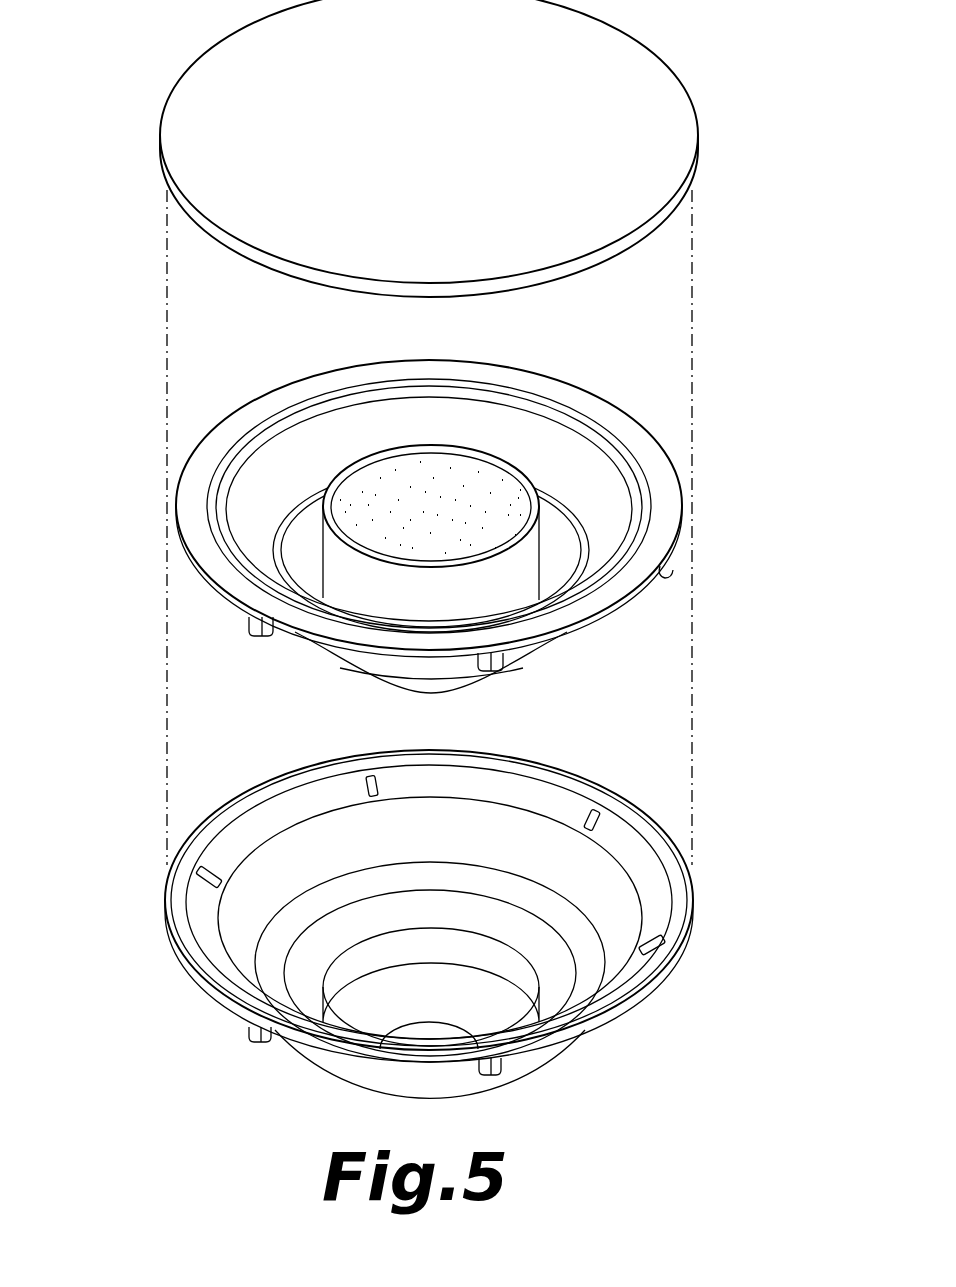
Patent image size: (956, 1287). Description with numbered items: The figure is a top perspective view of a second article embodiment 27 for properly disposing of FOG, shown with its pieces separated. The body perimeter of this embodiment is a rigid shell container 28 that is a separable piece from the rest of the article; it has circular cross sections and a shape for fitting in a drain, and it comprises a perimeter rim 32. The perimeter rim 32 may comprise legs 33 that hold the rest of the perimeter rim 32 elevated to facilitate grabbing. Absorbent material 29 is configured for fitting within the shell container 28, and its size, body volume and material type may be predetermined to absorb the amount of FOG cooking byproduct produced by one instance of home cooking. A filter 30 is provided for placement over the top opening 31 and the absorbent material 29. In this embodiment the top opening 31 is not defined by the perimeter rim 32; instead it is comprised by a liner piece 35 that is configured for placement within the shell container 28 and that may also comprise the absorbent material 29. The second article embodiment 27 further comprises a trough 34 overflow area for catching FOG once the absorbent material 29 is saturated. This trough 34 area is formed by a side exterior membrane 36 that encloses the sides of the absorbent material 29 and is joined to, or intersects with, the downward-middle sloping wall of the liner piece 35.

The second article embodiment 27 is at (75, 17).
The shell container 28 is at (463, 916).
The absorbent material 29 is at (405, 540).
The filter 30 is at (663, 87).
The top opening 31 is at (472, 521).
The perimeter rim 32 is at (565, 790).
The legs 33 is at (490, 1074).
The trough 34 is at (303, 568).
The liner piece 35 is at (743, 565).
The side exterior membrane 36 is at (497, 592).